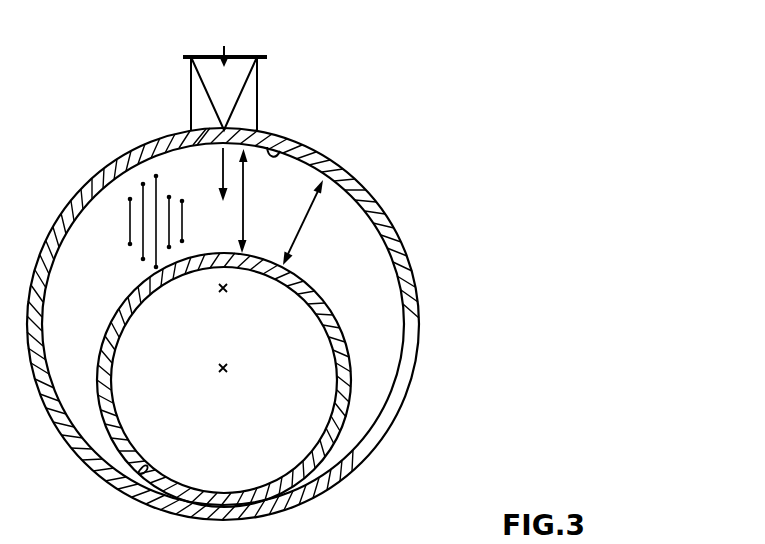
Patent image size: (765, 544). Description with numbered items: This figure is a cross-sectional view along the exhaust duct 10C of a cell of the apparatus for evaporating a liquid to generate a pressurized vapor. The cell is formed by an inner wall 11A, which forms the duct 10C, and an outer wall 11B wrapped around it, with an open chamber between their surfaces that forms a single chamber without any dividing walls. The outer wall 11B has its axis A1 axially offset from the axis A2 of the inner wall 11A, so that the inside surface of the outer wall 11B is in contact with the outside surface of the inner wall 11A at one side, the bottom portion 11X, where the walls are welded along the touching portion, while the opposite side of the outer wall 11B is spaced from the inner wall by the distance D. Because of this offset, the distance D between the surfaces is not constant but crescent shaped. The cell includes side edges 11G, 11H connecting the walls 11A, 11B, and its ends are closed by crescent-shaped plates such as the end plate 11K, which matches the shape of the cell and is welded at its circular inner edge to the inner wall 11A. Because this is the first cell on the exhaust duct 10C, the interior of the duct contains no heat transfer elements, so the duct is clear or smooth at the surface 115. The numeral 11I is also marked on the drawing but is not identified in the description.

The outer wall 11B is at (272, 153).
The end plate 11K is at (280, 189).
The distance between the surfaces D is at (246, 220).
The outer cylindrical wall 11I is at (370, 345).
The inner wall 11A is at (253, 258).
The axis of the outer wall A1 is at (227, 294).
The axis of the inner wall A2 is at (221, 373).
The duct surface 115 is at (186, 273).
The exhaust duct 10C is at (278, 437).
The side edge 11H is at (270, 495).
The bottom portion 11X is at (220, 502).
The side edge 11G is at (140, 470).